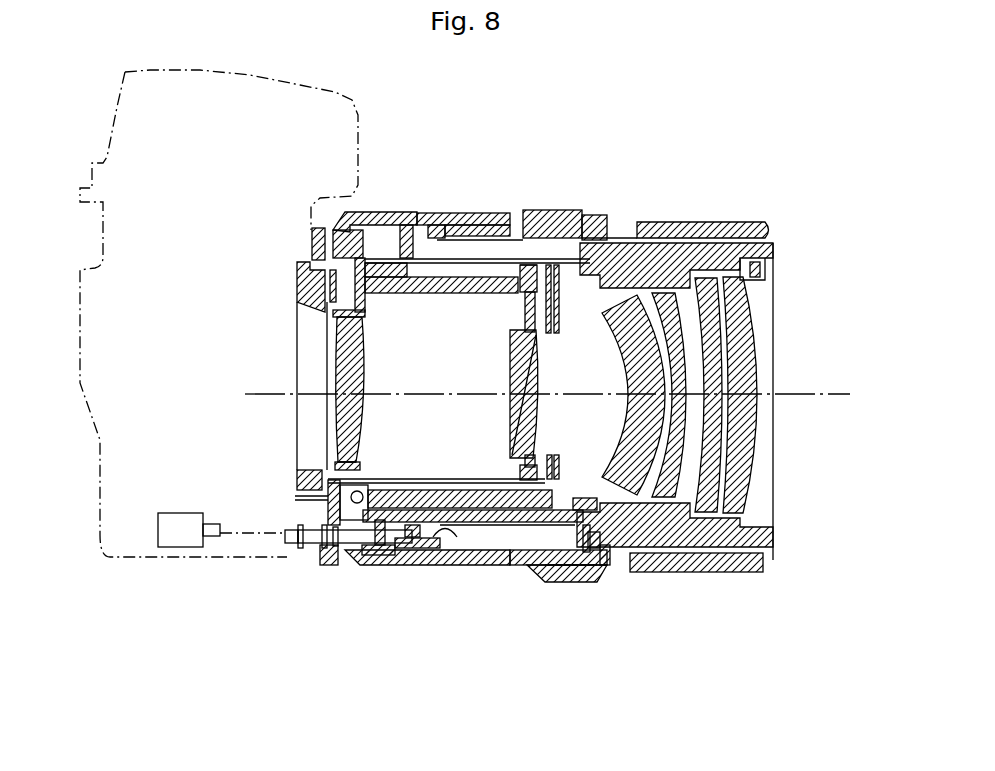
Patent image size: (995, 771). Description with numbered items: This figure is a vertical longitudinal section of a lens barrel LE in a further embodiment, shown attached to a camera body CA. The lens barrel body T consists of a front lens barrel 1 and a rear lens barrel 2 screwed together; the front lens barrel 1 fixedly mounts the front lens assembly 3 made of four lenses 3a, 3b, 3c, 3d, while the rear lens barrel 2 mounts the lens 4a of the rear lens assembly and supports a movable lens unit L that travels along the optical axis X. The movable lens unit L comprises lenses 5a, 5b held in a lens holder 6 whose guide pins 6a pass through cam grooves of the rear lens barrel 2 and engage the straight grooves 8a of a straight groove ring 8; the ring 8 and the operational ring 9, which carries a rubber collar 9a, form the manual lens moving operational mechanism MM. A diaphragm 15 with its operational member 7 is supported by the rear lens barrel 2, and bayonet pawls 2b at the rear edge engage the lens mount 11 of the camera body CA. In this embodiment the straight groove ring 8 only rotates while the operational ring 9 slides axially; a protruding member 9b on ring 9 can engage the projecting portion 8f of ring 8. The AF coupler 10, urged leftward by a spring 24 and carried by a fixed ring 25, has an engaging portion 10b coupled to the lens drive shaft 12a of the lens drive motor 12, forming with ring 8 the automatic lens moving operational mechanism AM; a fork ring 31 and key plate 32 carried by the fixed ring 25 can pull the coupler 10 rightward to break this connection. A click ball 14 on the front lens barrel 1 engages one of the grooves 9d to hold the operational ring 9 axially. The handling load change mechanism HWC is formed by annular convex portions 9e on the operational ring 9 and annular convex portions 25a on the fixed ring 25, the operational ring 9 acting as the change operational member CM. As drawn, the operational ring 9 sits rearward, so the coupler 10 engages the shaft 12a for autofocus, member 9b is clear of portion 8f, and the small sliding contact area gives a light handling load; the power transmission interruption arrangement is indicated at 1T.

The front lens barrel 1 is at (677, 250).
The rear lens barrel 2 is at (615, 280).
The bayonet pawls 2b is at (303, 263).
The front lens assembly 3 is at (793, 635).
The lens 3a is at (773, 513).
The lens 3b is at (703, 512).
The lens 3c is at (660, 497).
The lens 3d is at (622, 487).
The lens 4a is at (338, 345).
The lens 5a is at (517, 338).
The lens 5b is at (512, 368).
The lens holder 6 is at (520, 468).
The guide pins 6a is at (516, 250).
The operational member 7 is at (508, 489).
The straight groove ring 8 is at (497, 566).
The straight grooves 8a is at (406, 225).
The engaging projecting portion 8f is at (548, 575).
The operational ring 9 is at (512, 566).
The rubber collar 9a is at (553, 210).
The protruding member 9b is at (555, 582).
The engaging grooves 9d is at (598, 215).
The annular convex portions 9e is at (443, 240).
The AF coupler 10 is at (323, 565).
The engaging portion 10b is at (313, 545).
The lens mount 11 is at (312, 228).
The lens drive motor 12 is at (177, 513).
The lens drive shaft 12a is at (285, 548).
The click ball 14 is at (600, 556).
The diaphragm 15 is at (563, 336).
The spring 24 is at (387, 556).
The fixed ring 25 is at (432, 549).
The annular convex portions 25a is at (475, 213).
The fork ring 31 is at (413, 549).
The key plate 32 is at (466, 549).
The automatic lens moving operational mechanism AM is at (372, 555).
The camera body CA is at (290, 90).
The handling load change mechanism HWC is at (503, 212).
The lens barrel LE is at (756, 150).
The movable lens unit L is at (450, 312).
The lens barrel body T is at (702, 185).
The optical axis X is at (536, 390).
The manual lens moving operational mechanism MM is at (532, 690).
The change operational member CM is at (506, 728).
The barrel end 1T is at (535, 583).